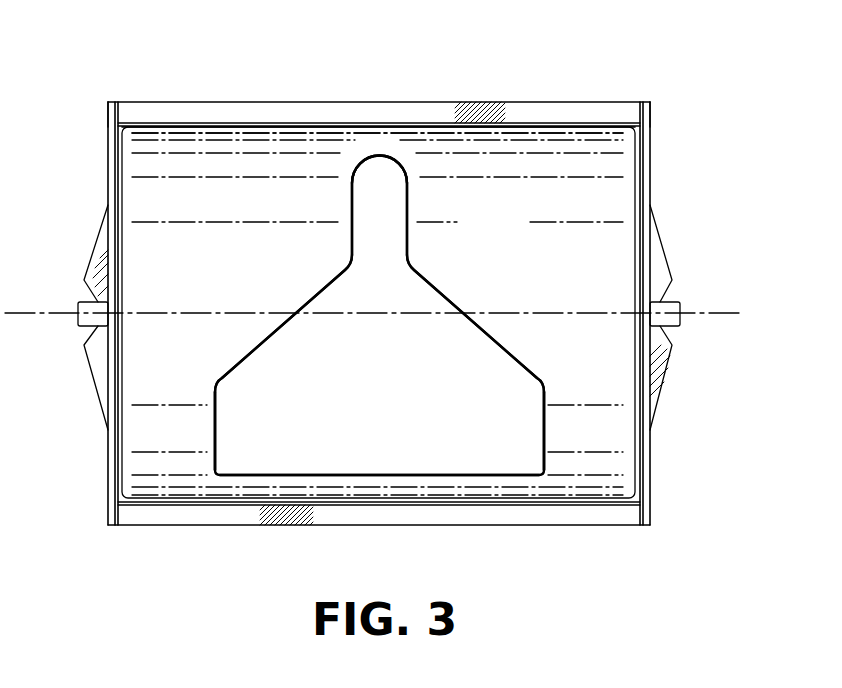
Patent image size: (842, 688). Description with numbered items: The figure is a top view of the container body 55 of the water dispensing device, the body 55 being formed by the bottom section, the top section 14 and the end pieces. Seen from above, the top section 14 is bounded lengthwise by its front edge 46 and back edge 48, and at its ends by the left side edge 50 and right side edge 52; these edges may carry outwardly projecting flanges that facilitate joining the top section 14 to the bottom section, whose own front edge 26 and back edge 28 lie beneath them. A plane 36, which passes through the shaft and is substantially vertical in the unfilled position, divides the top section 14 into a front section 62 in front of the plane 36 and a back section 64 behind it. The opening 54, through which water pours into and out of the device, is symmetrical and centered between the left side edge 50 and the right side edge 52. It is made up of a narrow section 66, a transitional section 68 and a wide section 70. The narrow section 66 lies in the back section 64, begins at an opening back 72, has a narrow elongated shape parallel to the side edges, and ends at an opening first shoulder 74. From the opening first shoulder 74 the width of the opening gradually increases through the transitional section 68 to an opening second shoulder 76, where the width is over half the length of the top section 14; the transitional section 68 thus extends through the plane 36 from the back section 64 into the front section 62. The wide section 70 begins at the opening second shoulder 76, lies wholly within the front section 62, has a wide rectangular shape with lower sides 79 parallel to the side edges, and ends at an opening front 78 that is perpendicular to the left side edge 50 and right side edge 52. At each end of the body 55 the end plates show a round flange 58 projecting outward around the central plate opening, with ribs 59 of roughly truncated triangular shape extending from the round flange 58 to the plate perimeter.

The top section 14 is at (522, 137).
The front edge 26 is at (379, 544).
The front edge 46 is at (570, 526).
The back edge 28 is at (378, 83).
The back edge 48 is at (188, 114).
The plane 36 is at (716, 316).
The left side edge 50 is at (119, 117).
The right side edge 52 is at (640, 117).
The opening 54 is at (110, 101).
The body 55 is at (762, 503).
The round flange 58 is at (78, 308).
The ribs 59 is at (92, 357).
The front section 62 is at (617, 463).
The back section 64 is at (437, 165).
The narrow section 66 is at (376, 201).
The transitional section 68 is at (482, 375).
The wide section 70 is at (232, 430).
The opening back 72 is at (378, 153).
The opening first shoulder 74 is at (345, 268).
The opening second shoulder 76 is at (217, 382).
The opening front 78 is at (229, 478).
The lower sides 79 is at (545, 425).